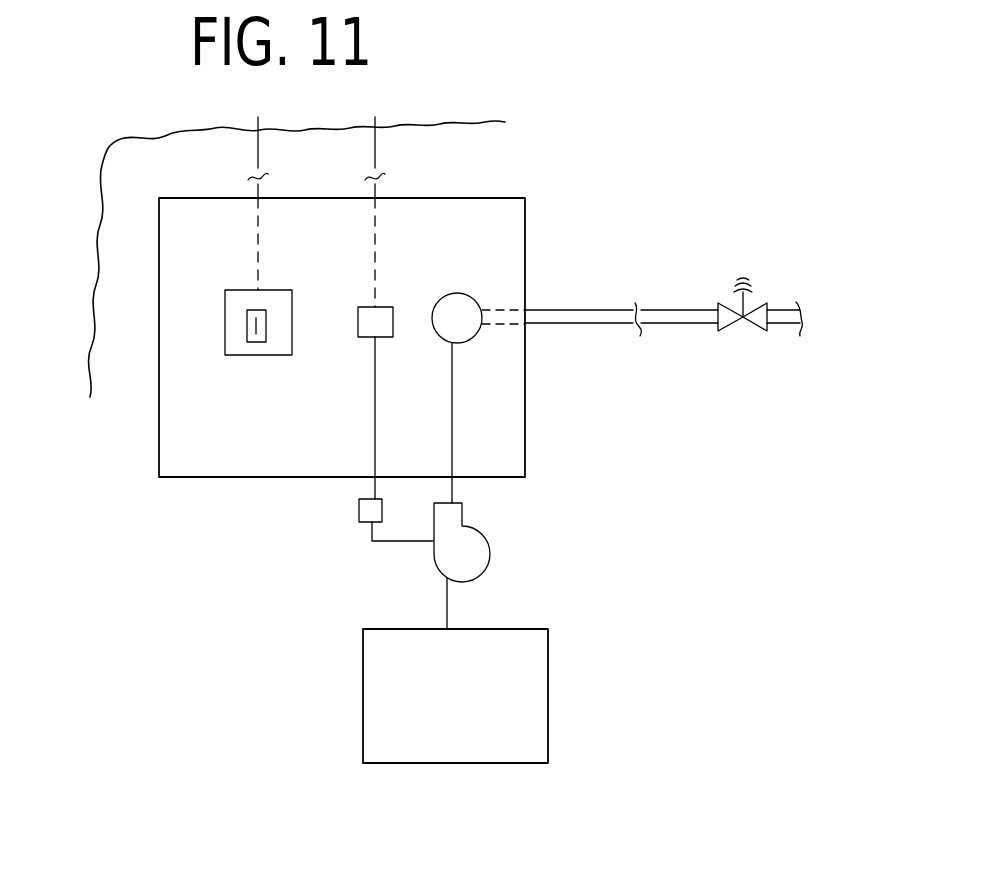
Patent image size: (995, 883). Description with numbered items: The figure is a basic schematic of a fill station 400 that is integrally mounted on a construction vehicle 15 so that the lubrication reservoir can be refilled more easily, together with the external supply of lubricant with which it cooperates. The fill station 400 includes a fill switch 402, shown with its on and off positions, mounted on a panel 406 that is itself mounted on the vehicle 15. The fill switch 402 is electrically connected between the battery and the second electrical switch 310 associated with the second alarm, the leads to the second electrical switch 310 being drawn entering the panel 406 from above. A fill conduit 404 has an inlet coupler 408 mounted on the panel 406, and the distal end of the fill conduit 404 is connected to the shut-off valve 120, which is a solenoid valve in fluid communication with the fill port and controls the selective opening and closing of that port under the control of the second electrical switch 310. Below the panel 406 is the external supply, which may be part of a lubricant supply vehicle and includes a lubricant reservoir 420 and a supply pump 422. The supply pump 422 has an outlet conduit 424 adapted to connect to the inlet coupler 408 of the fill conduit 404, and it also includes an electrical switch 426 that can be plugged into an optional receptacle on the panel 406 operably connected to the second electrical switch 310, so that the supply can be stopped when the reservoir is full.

The construction vehicle 15 is at (108, 179).
The second electrical switch 310 is at (334, 198).
The fill station 400 is at (150, 263).
The fill switch 402 is at (228, 355).
The fill conduit 404 is at (537, 311).
The panel 406 is at (183, 463).
The inlet coupler 408 is at (470, 300).
The shut-off valve 120 is at (765, 331).
The lubricant reservoir 420 is at (535, 660).
The supply pump 422 is at (481, 552).
The outlet conduit 424 is at (453, 490).
The electrical switch 426 is at (360, 508).